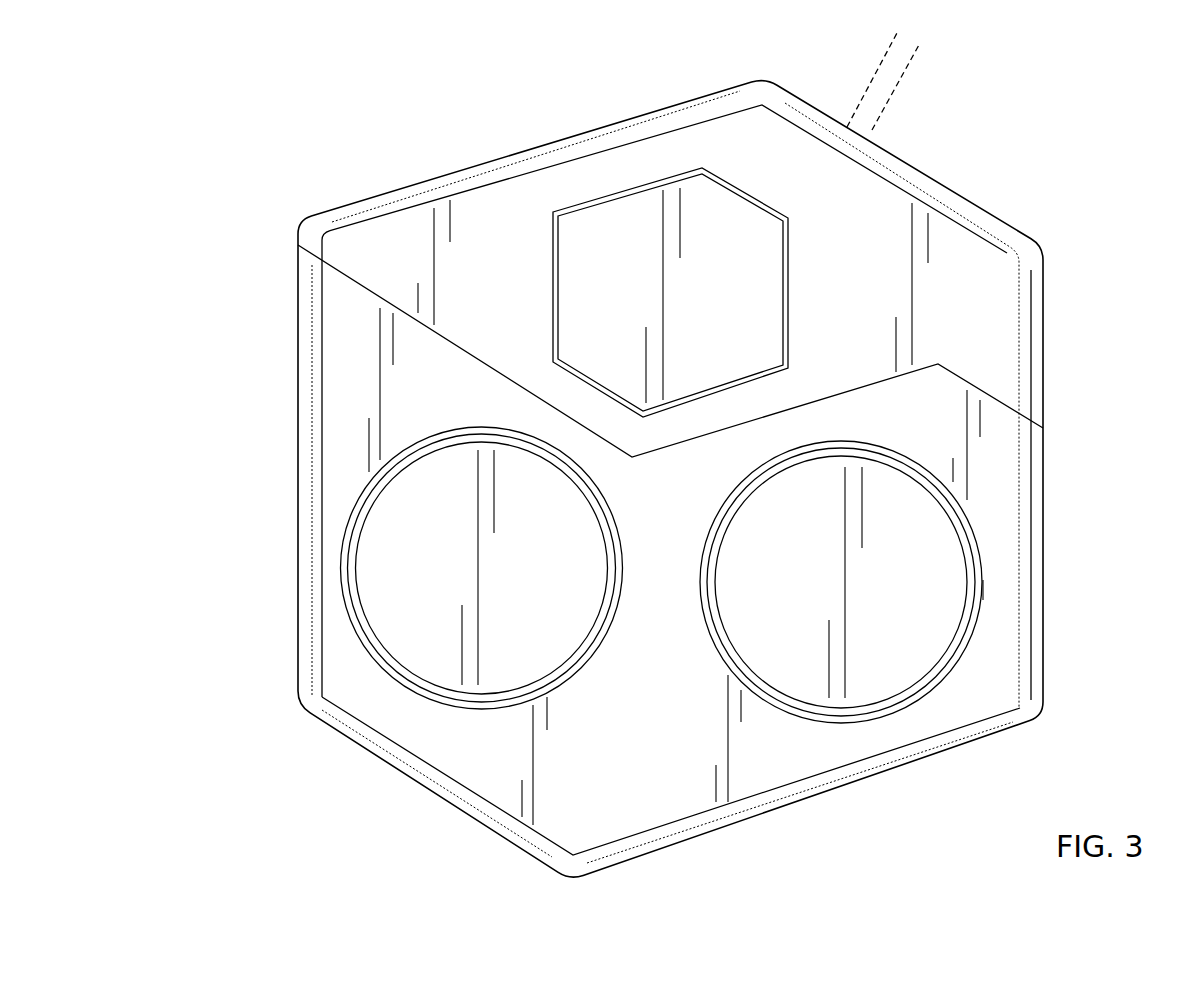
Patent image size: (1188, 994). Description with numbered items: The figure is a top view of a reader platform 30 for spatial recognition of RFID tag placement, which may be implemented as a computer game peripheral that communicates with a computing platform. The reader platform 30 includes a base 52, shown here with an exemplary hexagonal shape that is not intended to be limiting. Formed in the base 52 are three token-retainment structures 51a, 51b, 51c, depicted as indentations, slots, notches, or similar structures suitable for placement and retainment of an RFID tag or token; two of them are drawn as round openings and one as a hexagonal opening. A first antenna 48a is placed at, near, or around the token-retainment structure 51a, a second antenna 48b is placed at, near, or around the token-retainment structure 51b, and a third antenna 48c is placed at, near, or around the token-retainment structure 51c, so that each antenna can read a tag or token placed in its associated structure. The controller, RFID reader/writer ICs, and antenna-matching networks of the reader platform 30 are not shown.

The reader platform 30 is at (275, 823).
The first antenna 48a is at (865, 442).
The second antenna 48b is at (482, 427).
The third antenna 48c is at (703, 170).
The token-retainment structure 51a is at (861, 582).
The token-retainment structure 51b is at (493, 567).
The token-retainment structure 51c is at (676, 295).
The base 52 is at (670, 477).